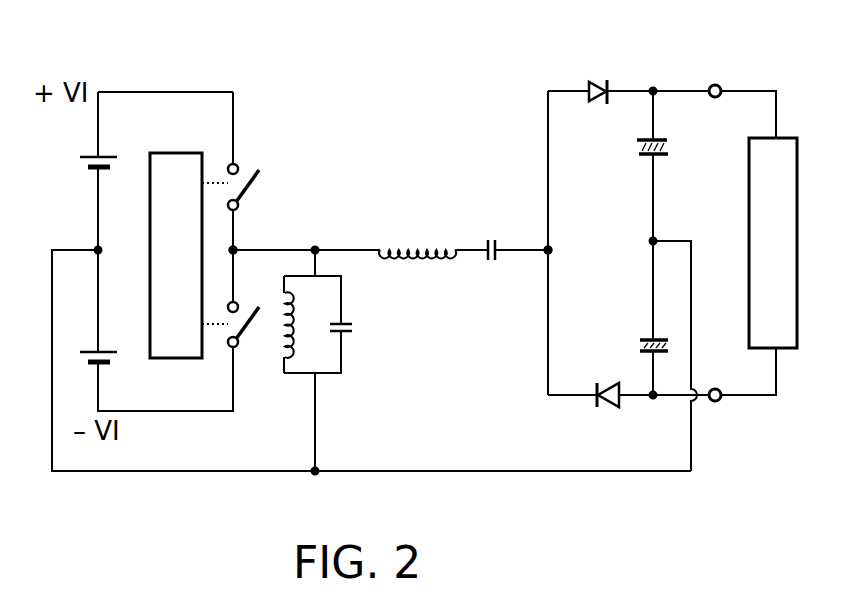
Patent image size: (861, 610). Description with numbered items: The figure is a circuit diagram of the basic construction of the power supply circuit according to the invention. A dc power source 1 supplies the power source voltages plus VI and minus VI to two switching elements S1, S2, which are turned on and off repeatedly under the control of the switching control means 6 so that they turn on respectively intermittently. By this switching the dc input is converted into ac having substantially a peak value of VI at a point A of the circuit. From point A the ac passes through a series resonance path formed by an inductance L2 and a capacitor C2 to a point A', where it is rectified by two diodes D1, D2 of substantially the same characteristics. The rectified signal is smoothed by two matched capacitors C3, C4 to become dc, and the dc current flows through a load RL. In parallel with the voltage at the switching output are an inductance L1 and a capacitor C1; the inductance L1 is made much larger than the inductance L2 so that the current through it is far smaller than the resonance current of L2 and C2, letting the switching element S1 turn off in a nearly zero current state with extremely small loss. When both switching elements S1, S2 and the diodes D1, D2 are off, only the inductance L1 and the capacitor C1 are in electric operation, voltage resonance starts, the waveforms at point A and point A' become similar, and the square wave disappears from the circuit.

The dc power source 1 is at (78, 172).
The switching control means 6 is at (167, 153).
The switching element S1 is at (258, 174).
The switching element S2 is at (245, 322).
The point A is at (277, 204).
The inductance L2 is at (412, 248).
The capacitor C2 is at (493, 238).
The point A' is at (516, 299).
The inductance L1 is at (296, 338).
The capacitor C1 is at (353, 331).
The diode D1 is at (600, 79).
The diode D2 is at (614, 382).
The capacitor C3 is at (664, 157).
The capacitor C4 is at (645, 338).
The load RL is at (773, 243).